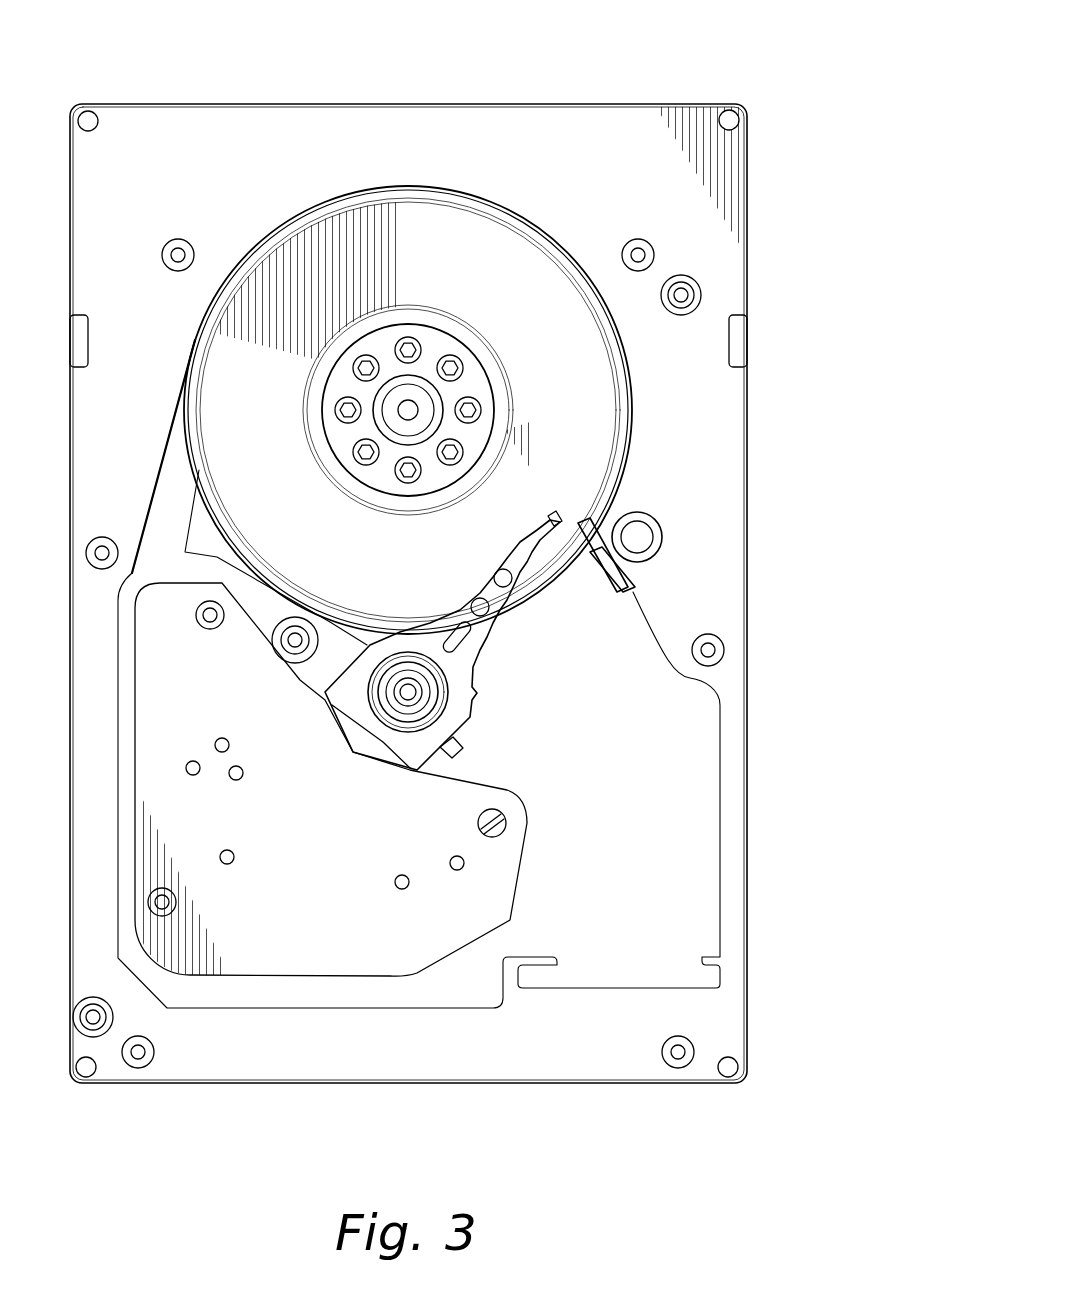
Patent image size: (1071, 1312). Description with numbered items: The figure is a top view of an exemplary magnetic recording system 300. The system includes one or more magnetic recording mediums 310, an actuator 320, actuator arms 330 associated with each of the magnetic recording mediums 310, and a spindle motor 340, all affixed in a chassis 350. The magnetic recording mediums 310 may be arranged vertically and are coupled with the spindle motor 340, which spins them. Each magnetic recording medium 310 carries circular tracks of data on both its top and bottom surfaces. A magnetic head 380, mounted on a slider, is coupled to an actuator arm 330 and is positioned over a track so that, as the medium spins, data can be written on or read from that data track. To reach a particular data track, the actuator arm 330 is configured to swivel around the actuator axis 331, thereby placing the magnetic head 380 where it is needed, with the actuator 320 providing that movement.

The magnetic recording system 300 is at (649, 35).
The chassis 350 is at (182, 105).
The magnetic recording medium 310 is at (495, 240).
The spindle motor 340 is at (425, 410).
The magnetic head 380 is at (548, 522).
The actuator arm 330 is at (493, 585).
The actuator axis 331 is at (412, 693).
The actuator 320 is at (505, 878).